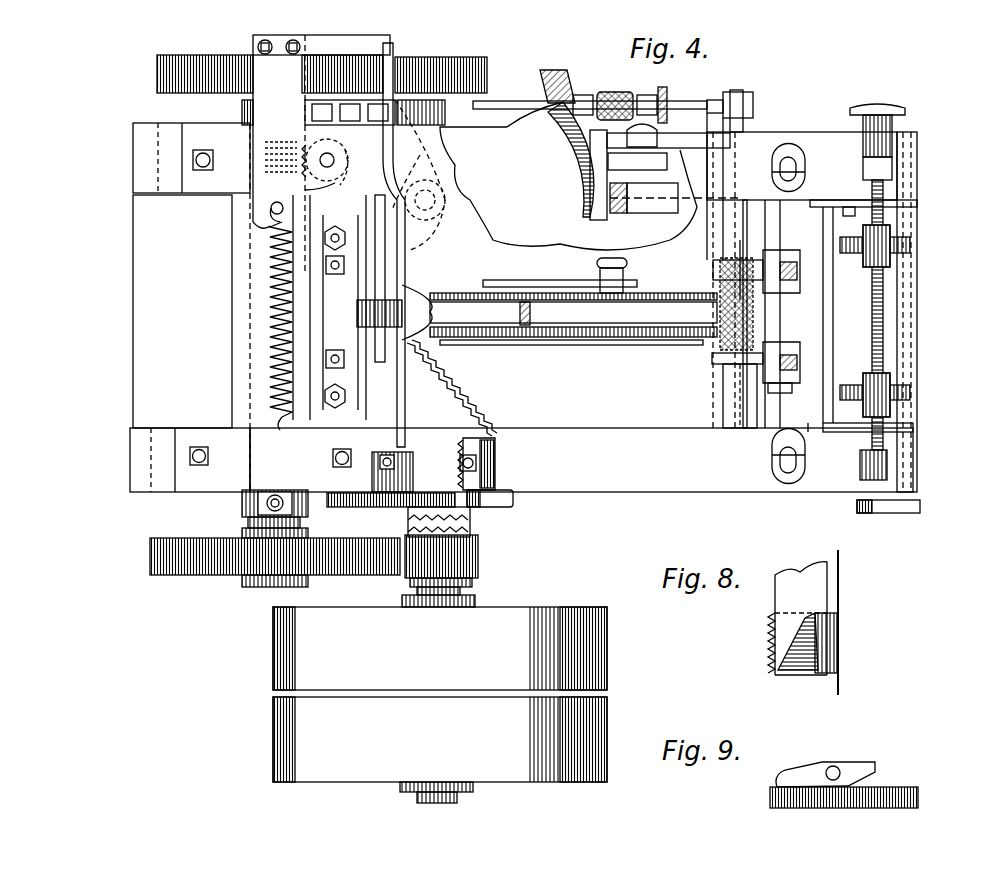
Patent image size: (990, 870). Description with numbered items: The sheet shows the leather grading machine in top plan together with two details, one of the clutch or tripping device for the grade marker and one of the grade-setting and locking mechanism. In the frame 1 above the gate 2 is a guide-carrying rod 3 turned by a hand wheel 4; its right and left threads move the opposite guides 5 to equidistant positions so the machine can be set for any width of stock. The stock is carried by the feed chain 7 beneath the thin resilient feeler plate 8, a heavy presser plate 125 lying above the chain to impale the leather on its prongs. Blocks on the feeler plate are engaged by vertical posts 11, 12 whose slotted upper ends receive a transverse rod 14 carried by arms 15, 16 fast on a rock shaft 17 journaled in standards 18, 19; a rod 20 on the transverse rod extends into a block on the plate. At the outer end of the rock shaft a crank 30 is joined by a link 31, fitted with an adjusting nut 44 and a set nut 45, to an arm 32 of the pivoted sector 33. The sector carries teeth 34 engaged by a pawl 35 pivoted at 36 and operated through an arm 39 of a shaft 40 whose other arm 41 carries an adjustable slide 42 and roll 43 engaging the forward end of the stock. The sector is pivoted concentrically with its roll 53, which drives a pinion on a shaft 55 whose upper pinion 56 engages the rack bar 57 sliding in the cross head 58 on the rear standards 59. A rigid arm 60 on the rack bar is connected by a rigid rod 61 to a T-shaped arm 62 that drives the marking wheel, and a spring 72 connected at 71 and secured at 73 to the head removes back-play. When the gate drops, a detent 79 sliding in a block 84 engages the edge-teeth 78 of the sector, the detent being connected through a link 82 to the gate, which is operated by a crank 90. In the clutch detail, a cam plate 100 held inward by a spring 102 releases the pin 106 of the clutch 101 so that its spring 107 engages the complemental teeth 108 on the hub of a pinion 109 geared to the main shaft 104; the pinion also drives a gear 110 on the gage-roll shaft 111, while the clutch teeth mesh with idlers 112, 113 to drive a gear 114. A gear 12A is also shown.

In FIG. 4, the frame 1 is at (686, 492).
In FIG. 4, the gate 2 is at (915, 205).
In FIG. 4, the guide-carrying rod 3 is at (885, 200).
In FIG. 4, the hand wheel 4 is at (893, 110).
In FIG. 4, the guides 5 is at (900, 253).
In FIG. 4, the feed chain 7 is at (625, 337).
In FIG. 4, the feeler plate 8 is at (806, 433).
In FIG. 4, the vertical post 11 is at (800, 272).
In FIG. 4, the vertical post 12 is at (800, 360).
In FIG. 4, the drive gear 12A is at (243, 110).
In FIG. 4, the transverse pin or rod 14 is at (792, 388).
In FIG. 4, the arm 15 is at (745, 260).
In FIG. 4, the arm 16 is at (712, 362).
In FIG. 4, the rock shaft 17 is at (745, 124).
In FIG. 4, the standard 18 is at (790, 132).
In FIG. 4, the standard 19 is at (722, 492).
In FIG. 4, the rod 20 is at (835, 310).
In FIG. 4, the crank 30 is at (755, 104).
In FIG. 4, the link 31 is at (680, 140).
In FIG. 4, the arm 32 is at (400, 120).
In FIG. 4, the sector 33 is at (568, 176).
In FIG. 4, the teeth 34 is at (545, 76).
In FIG. 9, the teeth 34 is at (886, 787).
In FIG. 4, the pawl 35 is at (592, 218).
In FIG. 9, the pawl 35 is at (778, 780).
In FIG. 4, the pawl pivot 36 is at (600, 165).
In FIG. 9, the pawl pivot 36 is at (838, 768).
In FIG. 4, the arm 39 is at (738, 90).
In FIG. 4, the shaft 40 is at (700, 300).
In FIG. 4, the arm 41 is at (520, 280).
In FIG. 4, the adjustable slide 42 is at (600, 272).
In FIG. 4, the roll 43 is at (620, 280).
In FIG. 4, the adjusting nut 44 is at (612, 92).
In FIG. 4, the set nut 45 is at (668, 90).
In FIG. 4, the roll 53 is at (308, 190).
In FIG. 4, the shaft 55 is at (322, 157).
In FIG. 4, the pinion 56 is at (348, 163).
In FIG. 4, the rack bar 57 is at (268, 75).
In FIG. 4, the cross head 58 is at (215, 135).
In FIG. 4, the rear standards 59 is at (170, 142).
In FIG. 4, the rigid arm 60 is at (330, 48).
In FIG. 4, the rigid rod 61 is at (455, 160).
In FIG. 4, the T-shaped arm 62 is at (378, 285).
In FIG. 4, the spring connection 71 is at (270, 210).
In FIG. 4, the spring 72 is at (270, 318).
In FIG. 4, the spring anchorage 73 is at (272, 418).
In FIG. 4, the edge-teeth 78 is at (560, 98).
In FIG. 9, the edge-teeth 78 is at (920, 797).
In FIG. 4, the detent 79 is at (712, 272).
In FIG. 4, the link 82 is at (855, 213).
In FIG. 4, the block 84 is at (645, 213).
In FIG. 4, the crank 90 is at (865, 513).
In FIG. 4, the cam plate 100 is at (500, 490).
In FIG. 8, the cam plate 100 is at (785, 600).
In FIG. 4, the clutch 101 is at (472, 514).
In FIG. 8, the clutch 101 is at (760, 657).
In FIG. 4, the spring 102 is at (462, 404).
In FIG. 4, the main shaft 104 is at (458, 592).
In FIG. 8, the pin 106 is at (778, 675).
In FIG. 8, the spring 107 is at (838, 637).
In FIG. 4, the complemental teeth 108 is at (472, 530).
In FIG. 4, the pinion 109 is at (480, 558).
In FIG. 4, the gear 110 is at (152, 562).
In FIG. 4, the gage-roll shaft 111 is at (244, 522).
In FIG. 4, the idler 112 is at (460, 468).
In FIG. 4, the idler 113 is at (405, 482).
In FIG. 4, the gear 114 is at (345, 482).
In FIG. 4, the presser plate 125 is at (590, 323).